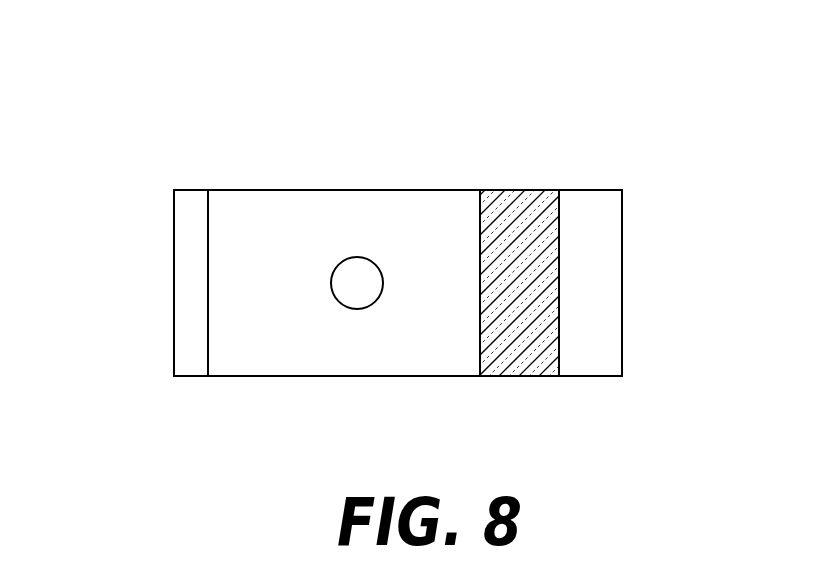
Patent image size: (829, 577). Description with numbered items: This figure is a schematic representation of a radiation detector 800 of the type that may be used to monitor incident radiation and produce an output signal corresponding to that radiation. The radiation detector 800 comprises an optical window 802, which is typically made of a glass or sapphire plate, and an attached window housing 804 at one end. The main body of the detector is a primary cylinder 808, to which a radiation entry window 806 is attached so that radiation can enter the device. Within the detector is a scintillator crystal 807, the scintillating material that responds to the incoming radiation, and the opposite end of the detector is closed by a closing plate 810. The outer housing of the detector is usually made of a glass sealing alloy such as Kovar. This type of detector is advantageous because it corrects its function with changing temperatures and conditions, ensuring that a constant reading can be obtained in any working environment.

The radiation detector 800 is at (470, 124).
The optical window 802 is at (625, 315).
The window housing 804 is at (594, 220).
The radiation entry window 806 is at (355, 286).
The scintillator crystal 807 is at (528, 234).
The primary cylinder 808 is at (443, 349).
The closing plate 810 is at (194, 357).